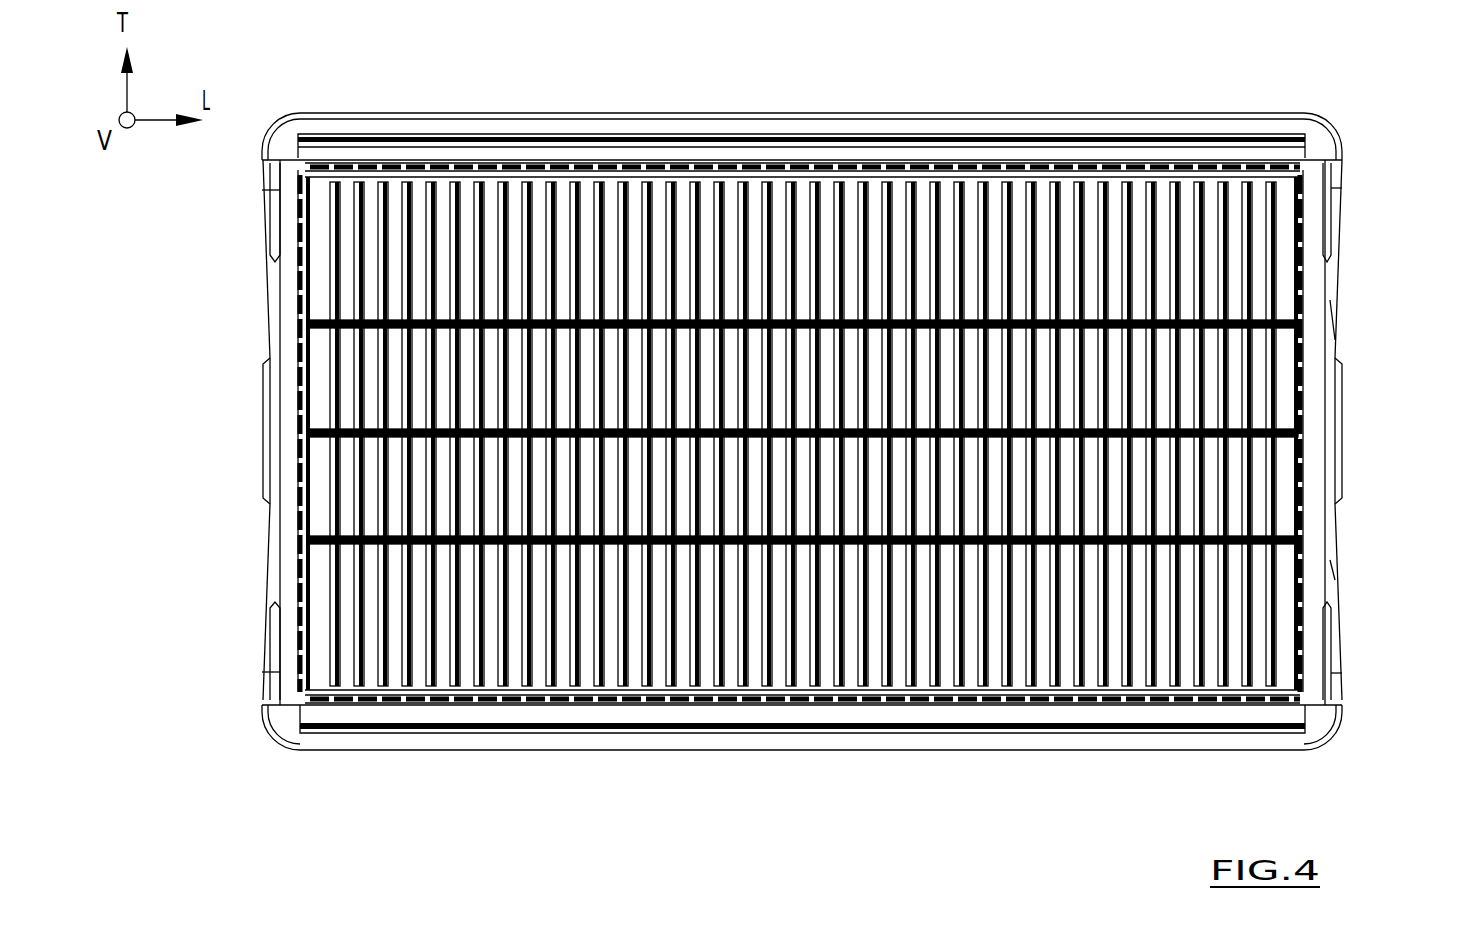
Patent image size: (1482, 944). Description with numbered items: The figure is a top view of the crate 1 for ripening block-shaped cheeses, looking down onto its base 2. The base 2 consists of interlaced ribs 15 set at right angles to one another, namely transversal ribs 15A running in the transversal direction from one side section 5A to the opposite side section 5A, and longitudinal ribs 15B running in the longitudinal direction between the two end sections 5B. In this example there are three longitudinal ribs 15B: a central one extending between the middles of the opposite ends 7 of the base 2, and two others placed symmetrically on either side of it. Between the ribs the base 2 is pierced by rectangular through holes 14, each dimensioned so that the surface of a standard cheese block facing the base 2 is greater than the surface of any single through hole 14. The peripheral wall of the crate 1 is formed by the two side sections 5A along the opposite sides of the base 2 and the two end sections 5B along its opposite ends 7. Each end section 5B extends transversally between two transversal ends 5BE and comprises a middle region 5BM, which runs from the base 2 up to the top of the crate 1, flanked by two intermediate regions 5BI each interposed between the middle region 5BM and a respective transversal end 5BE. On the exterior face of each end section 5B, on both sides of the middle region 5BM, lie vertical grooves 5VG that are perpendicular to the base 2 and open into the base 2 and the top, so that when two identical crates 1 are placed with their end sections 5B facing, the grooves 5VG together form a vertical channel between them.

The crate 1 is at (796, 436).
The base 2 is at (798, 430).
The side section 5A is at (735, 150).
The end section 5B is at (824, 432).
The transversal end 5BE is at (1330, 122).
The intermediate region 5BI is at (1335, 340).
The middle region 5BM is at (1335, 423).
The vertical groove 5VG is at (1360, 270).
The end of the base 7 is at (1297, 283).
The through hole 14 is at (803, 430).
The interlaced rib 15 is at (862, 272).
The transversal rib 15A is at (600, 218).
The longitudinal rib 15B is at (432, 322).